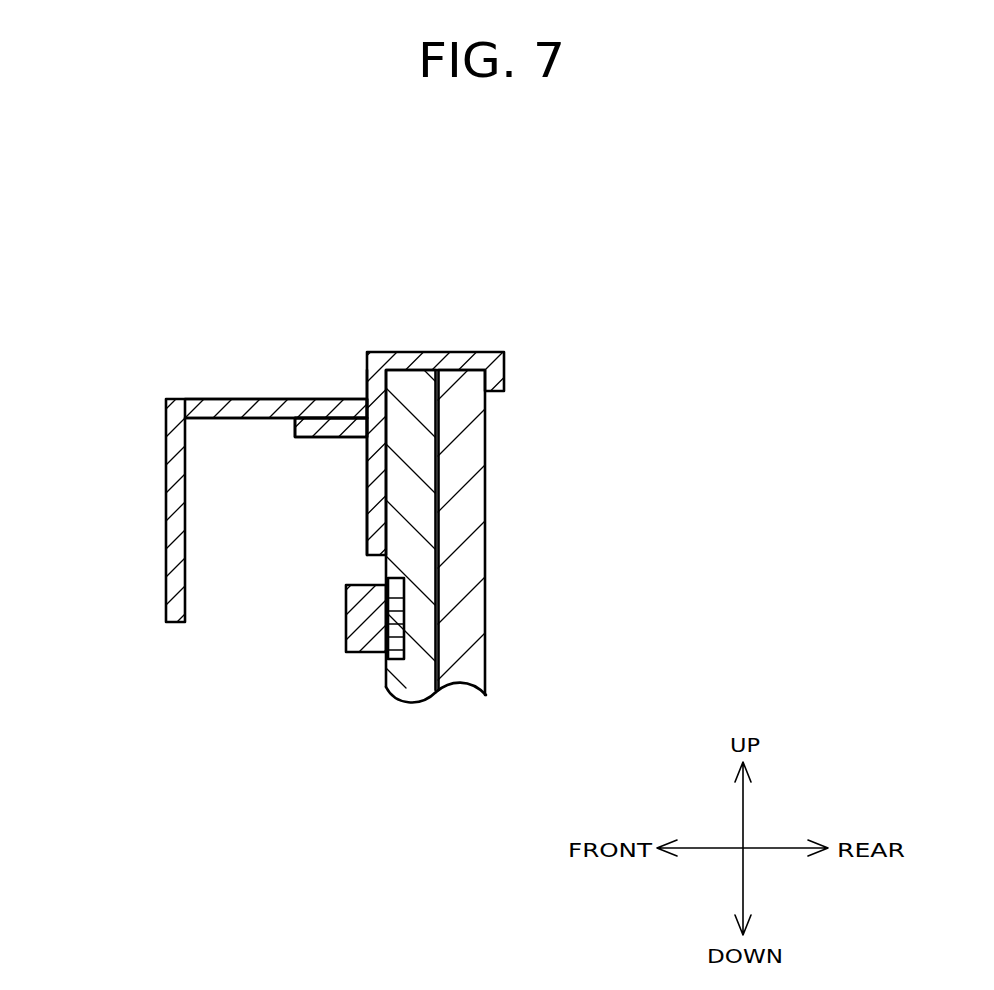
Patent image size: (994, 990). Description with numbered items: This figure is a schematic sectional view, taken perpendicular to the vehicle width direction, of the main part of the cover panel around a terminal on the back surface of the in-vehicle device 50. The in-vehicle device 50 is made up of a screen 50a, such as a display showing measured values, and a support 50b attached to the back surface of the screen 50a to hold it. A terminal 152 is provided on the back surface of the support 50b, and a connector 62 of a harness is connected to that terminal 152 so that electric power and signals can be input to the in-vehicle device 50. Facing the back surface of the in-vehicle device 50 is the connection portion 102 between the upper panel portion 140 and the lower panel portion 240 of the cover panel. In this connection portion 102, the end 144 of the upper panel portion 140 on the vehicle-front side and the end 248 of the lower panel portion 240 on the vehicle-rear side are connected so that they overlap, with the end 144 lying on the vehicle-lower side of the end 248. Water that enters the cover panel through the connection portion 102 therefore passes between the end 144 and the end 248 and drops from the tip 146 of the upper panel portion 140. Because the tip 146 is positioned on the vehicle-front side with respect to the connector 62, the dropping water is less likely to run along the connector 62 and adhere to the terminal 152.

The connection portion 102 is at (328, 338).
The upper panel portion 140 is at (443, 352).
The end of the upper panel portion on the front side of the vehicle 144 is at (344, 430).
The tip of the upper panel portion on the front side of the vehicle 146 is at (350, 418).
The lower panel portion 240 is at (177, 572).
The end of the lower panel portion on the rear side of the vehicle 248 is at (322, 405).
The in-vehicle device 50 is at (554, 536).
The screen 50a is at (470, 553).
The support 50b is at (418, 647).
The connector 62 is at (365, 612).
The terminal 152 is at (403, 650).